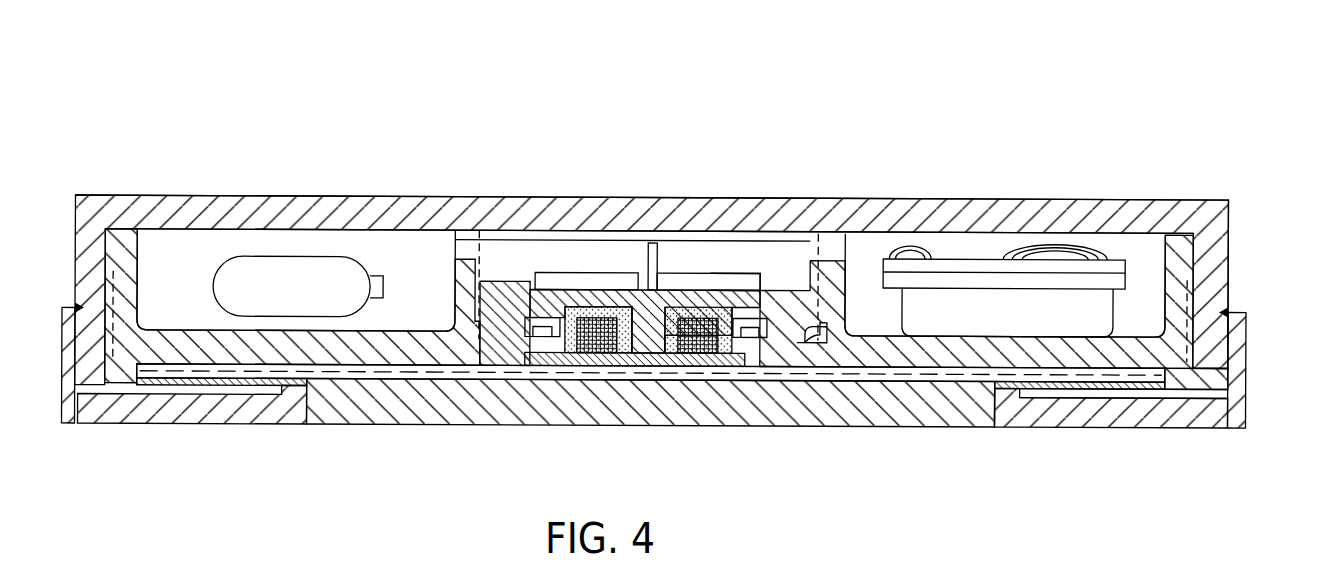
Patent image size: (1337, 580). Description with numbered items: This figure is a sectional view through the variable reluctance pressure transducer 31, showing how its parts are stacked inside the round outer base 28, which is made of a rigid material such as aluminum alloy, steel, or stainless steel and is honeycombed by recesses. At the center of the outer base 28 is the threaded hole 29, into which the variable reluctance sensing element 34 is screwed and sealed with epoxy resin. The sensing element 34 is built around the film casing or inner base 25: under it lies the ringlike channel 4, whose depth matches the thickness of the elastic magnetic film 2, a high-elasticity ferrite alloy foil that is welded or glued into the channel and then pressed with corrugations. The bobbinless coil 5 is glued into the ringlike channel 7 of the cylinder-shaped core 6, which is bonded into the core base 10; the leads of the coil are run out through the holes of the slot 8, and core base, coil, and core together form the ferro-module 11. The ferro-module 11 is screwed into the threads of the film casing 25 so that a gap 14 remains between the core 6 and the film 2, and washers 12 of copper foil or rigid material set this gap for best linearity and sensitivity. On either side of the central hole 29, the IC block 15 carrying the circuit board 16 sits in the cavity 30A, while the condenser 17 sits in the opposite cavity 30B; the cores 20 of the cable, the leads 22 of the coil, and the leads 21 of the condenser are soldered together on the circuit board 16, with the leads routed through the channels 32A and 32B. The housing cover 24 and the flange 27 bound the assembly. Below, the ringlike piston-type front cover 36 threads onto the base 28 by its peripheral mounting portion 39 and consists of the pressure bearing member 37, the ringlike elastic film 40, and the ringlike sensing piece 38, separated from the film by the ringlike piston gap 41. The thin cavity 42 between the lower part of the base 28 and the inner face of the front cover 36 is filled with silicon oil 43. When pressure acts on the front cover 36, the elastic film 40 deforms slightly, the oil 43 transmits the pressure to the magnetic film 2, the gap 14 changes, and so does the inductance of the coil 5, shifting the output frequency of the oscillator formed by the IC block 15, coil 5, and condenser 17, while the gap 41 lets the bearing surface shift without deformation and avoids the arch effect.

The elastic magnetic film 2 is at (726, 350).
The ringlike channel 4 is at (752, 337).
The coil 5 is at (704, 350).
The cylinder-shaped core 6 is at (622, 350).
The ringlike channel 7 is at (596, 350).
The slot 8 is at (743, 280).
The core base 10 is at (565, 280).
The ferro-module 11 is at (667, 262).
The washer 12 is at (541, 338).
The gap 14 is at (662, 352).
The IC block 15 is at (1080, 300).
The circuit board 16 is at (952, 262).
The condenser 17 is at (343, 262).
The cores of cable 20 is at (1042, 245).
The leads of condenser 21 is at (430, 250).
The leads of coil 22 is at (650, 250).
The cover 24 is at (423, 207).
The film casing 25 is at (795, 342).
The flange 27 is at (1240, 343).
The outer base 28 is at (832, 305).
The central hole 29 is at (655, 308).
The cavity 30A is at (1143, 287).
The cavity 30B is at (280, 238).
The assembly 31 is at (1084, 88).
The channel 32A is at (826, 255).
The channel 32B is at (480, 262).
The variable reluctance sensing element 34 is at (548, 282).
The film front cover 36 is at (1029, 437).
The pressure bearing member 37 is at (968, 413).
The ringlike sensing piece 38 is at (1095, 415).
The peripheral mounting portion 39 is at (1213, 377).
The ringlike elastic film 40 is at (1162, 388).
The ringlike gap 41 is at (1140, 392).
The thin cavity 42 is at (942, 375).
The silicon oil 43 is at (888, 370).